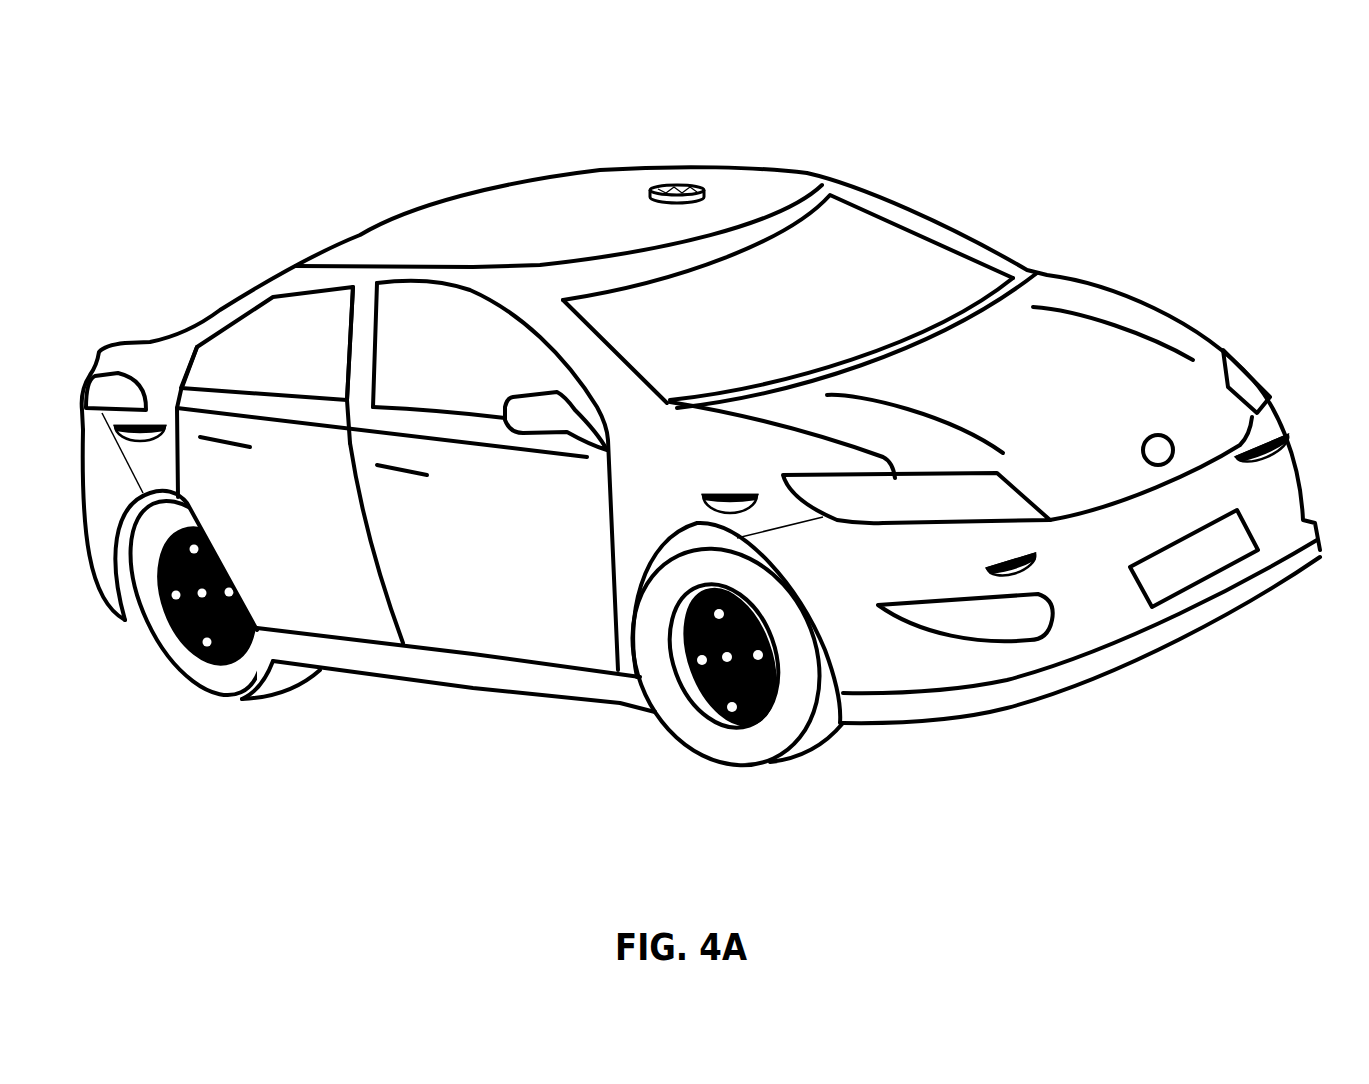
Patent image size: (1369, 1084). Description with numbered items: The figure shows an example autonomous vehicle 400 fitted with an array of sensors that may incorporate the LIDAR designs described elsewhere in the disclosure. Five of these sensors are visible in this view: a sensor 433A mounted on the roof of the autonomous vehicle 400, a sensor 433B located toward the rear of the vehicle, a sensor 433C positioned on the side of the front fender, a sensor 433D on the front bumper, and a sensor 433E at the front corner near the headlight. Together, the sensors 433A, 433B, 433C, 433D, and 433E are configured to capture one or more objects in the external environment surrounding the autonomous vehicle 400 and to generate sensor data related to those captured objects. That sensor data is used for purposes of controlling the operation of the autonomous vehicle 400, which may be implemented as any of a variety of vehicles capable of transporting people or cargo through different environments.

The autonomous vehicle 400 is at (1088, 109).
The sensor 433A is at (680, 188).
The sensor 433B is at (163, 426).
The sensor 433C is at (728, 493).
The sensor 433D is at (993, 565).
The sensor 433E is at (1237, 455).